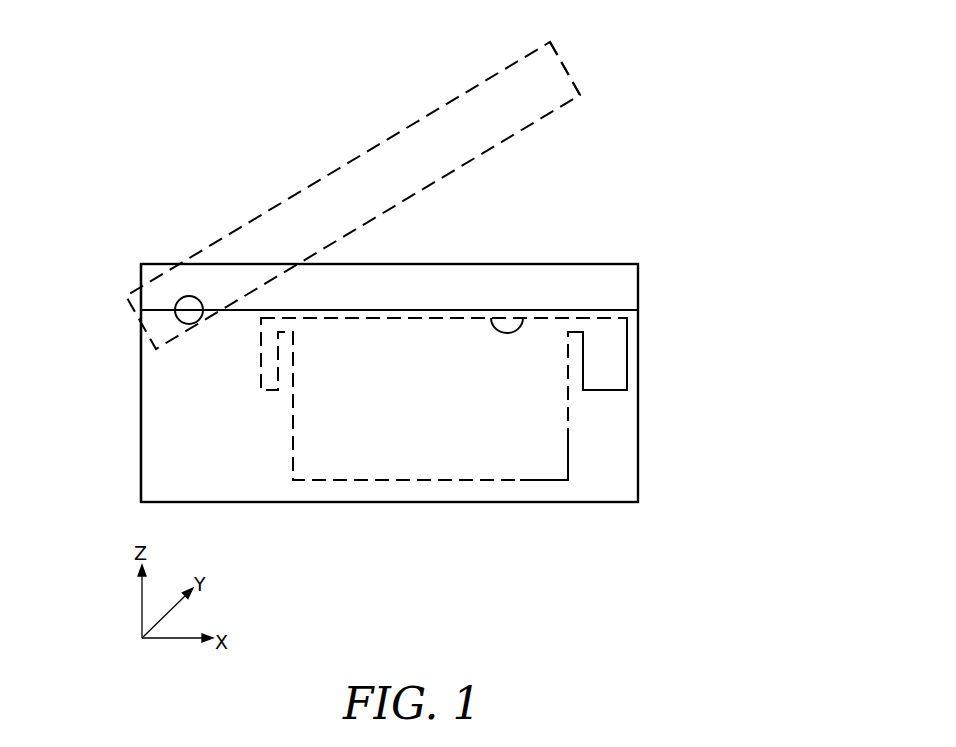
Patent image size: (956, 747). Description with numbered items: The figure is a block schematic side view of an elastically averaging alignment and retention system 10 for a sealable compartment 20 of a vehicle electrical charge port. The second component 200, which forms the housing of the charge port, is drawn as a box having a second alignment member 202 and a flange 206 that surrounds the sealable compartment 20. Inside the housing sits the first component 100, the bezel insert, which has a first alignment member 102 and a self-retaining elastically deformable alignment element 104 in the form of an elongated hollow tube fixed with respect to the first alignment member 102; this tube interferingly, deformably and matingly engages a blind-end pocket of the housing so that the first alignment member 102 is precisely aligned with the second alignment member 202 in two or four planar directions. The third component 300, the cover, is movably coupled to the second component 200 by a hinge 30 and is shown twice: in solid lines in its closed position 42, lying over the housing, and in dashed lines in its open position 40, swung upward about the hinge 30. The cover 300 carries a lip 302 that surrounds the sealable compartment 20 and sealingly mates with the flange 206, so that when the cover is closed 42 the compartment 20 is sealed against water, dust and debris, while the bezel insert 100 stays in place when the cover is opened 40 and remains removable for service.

The elastically averaging alignment and retention system 10 is at (688, 187).
The sealable compartment 20 is at (195, 375).
The hinge 30 is at (169, 293).
The open position 40 is at (578, 59).
The closed position 42 is at (651, 298).
The first component 100 is at (580, 430).
The first alignment member 102 is at (568, 458).
The self-retaining elastically deformable alignment element 104 is at (627, 358).
The second component 200 is at (130, 478).
The second alignment member 202 is at (140, 418).
The flange 206 is at (526, 316).
The third component 300 is at (651, 275).
The lip 302 is at (415, 312).